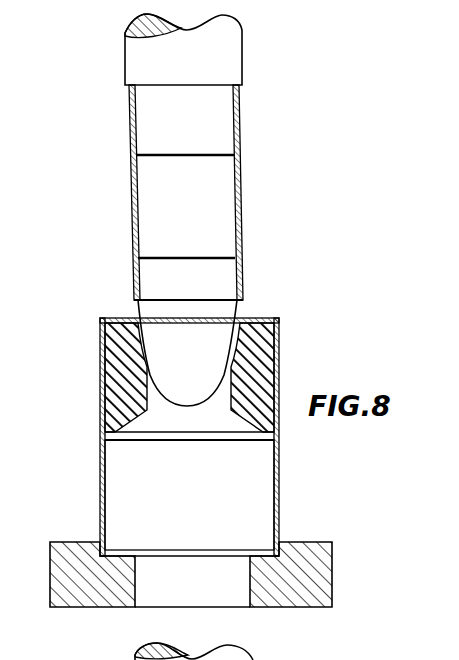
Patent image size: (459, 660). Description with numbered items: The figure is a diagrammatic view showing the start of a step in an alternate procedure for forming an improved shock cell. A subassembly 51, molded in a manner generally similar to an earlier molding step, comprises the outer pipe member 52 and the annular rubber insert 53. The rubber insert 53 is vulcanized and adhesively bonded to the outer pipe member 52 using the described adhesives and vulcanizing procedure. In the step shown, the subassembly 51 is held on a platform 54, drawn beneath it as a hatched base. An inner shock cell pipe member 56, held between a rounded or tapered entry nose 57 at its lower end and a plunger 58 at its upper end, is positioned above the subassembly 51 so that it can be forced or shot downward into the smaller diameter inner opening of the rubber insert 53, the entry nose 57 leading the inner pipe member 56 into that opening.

The subassembly 51 is at (96, 474).
The outer pipe member 52 is at (282, 502).
The annular rubber insert 53 is at (128, 381).
The platform 54 is at (283, 592).
The inner shock cell pipe member 56 is at (240, 183).
The entry nose 57 is at (186, 380).
The plunger 58 is at (145, 64).